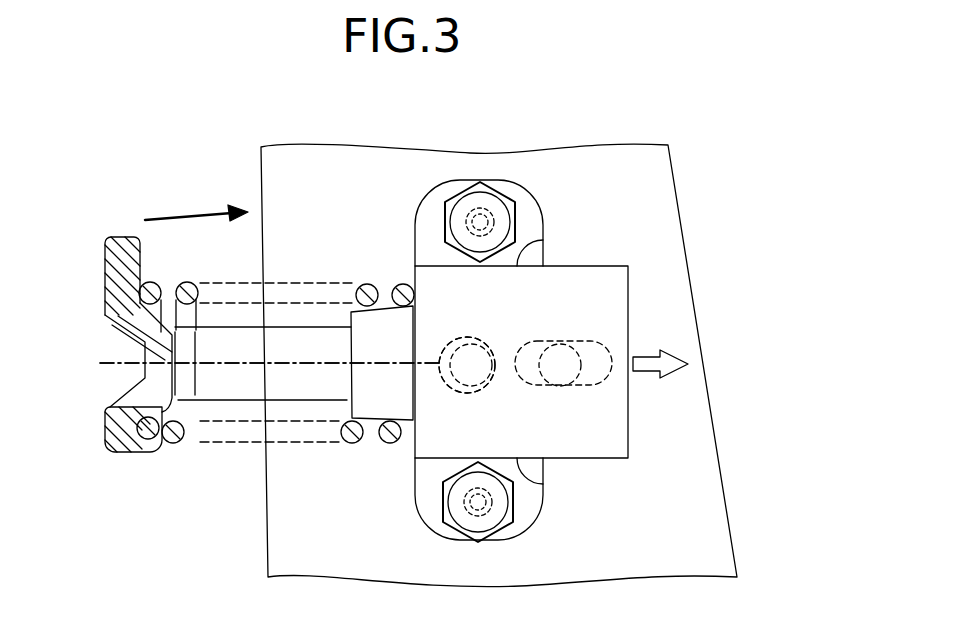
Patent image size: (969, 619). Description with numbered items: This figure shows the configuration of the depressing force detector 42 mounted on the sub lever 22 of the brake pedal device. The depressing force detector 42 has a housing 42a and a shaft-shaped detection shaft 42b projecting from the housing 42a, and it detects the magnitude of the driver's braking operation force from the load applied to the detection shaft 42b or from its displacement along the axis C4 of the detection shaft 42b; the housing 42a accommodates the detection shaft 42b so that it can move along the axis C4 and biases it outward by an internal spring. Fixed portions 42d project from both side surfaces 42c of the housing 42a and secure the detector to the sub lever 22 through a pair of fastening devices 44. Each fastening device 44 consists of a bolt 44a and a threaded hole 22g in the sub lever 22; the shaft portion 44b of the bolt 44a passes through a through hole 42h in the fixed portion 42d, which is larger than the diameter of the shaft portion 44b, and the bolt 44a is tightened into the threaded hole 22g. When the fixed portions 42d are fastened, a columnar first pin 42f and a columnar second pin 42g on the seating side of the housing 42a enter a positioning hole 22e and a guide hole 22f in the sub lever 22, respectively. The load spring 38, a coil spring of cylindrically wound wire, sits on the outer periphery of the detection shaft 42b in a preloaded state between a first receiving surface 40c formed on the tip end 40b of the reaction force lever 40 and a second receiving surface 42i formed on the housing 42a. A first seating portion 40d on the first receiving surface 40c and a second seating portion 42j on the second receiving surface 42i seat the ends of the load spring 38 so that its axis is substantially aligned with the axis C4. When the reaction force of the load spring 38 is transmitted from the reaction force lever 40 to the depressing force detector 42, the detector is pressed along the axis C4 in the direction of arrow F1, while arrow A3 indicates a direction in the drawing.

The sub lever 22 is at (388, 128).
The positioning hole 22e is at (468, 387).
The guide hole 22f is at (533, 388).
The threaded hole 22g is at (482, 205).
The load spring 38 is at (171, 444).
The reaction force lever 40 is at (114, 360).
The tip end 40b is at (118, 262).
The first receiving surface 40c is at (145, 410).
The first seating portion 40d is at (150, 340).
The depressing force detector 42 is at (387, 337).
The housing 42a is at (605, 462).
The detection shaft 42b is at (290, 350).
The side surfaces 42c is at (530, 262).
The fixed portions 42d is at (432, 213).
The first pin 42f is at (480, 344).
The second pin 42g is at (562, 342).
The through hole 42h is at (522, 345).
The second receiving surface 42i is at (402, 332).
The second seating portion 42j is at (385, 380).
The fastening device 44 is at (473, 367).
The bolt 44a is at (466, 200).
The shaft portion 44b is at (447, 231).
The direction A3 is at (196, 207).
The axis C4 is at (251, 366).
The arrow F1 is at (654, 360).